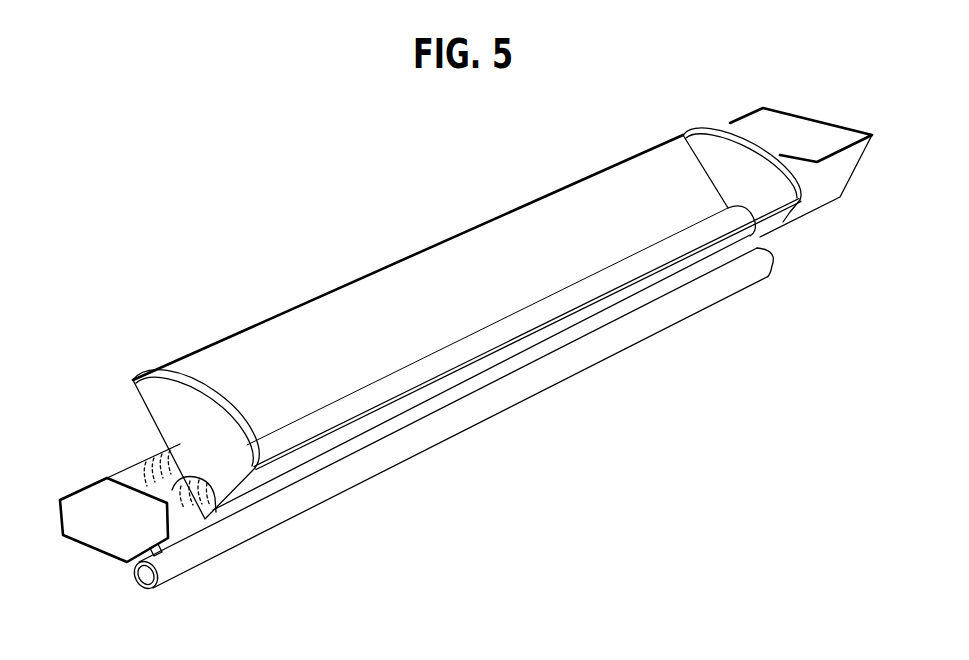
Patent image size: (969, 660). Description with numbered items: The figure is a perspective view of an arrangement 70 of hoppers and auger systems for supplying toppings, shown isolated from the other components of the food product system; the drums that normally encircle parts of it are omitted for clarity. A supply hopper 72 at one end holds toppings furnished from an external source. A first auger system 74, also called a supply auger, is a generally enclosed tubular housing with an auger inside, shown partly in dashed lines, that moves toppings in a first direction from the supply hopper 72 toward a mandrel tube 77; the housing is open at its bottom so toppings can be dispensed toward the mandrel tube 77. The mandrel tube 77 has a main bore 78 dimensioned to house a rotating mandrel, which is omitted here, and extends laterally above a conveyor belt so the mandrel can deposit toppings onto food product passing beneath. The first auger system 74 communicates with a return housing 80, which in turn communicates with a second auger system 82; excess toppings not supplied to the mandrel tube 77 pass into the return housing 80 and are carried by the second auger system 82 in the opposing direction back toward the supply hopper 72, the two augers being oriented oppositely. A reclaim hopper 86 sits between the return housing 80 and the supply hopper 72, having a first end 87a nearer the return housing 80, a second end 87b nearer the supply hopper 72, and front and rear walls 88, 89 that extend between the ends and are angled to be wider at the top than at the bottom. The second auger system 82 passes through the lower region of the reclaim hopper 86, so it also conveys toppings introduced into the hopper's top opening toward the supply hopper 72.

The arrangement of hoppers and auger systems 70 is at (385, 219).
The supply hopper 72 is at (800, 158).
The first auger system 74 is at (138, 463).
The mandrel tube 77 is at (545, 378).
The main bore 78 is at (145, 577).
The return housing 80 is at (98, 533).
The second auger system 82 is at (205, 520).
The reclaim hopper 86 is at (528, 237).
The first end 87a is at (180, 397).
The second end 87b is at (720, 138).
The front wall 88 is at (667, 273).
The rear wall 89 is at (627, 177).